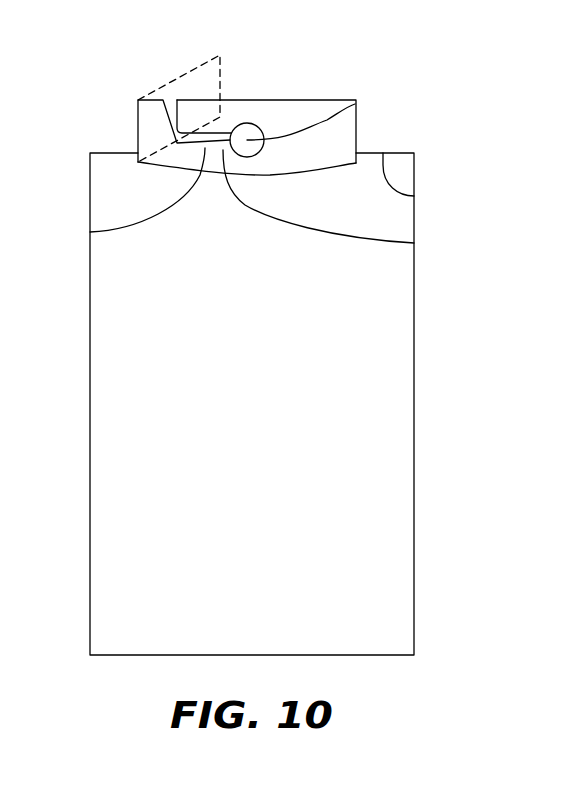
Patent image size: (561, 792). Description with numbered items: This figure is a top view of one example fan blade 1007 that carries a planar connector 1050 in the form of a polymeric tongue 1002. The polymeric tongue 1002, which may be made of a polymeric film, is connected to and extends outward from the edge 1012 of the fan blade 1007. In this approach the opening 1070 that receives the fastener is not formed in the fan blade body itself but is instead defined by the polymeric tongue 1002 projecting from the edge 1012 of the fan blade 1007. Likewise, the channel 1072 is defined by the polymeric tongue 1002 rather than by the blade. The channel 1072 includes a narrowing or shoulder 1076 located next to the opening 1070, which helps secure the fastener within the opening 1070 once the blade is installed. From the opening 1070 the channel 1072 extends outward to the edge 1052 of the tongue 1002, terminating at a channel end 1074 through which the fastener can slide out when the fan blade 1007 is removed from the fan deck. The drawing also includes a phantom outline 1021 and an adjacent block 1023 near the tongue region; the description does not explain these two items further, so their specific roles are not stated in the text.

The polymeric tongue 1002 is at (338, 143).
The fan blade 1007 is at (398, 302).
The edge of the fan blade 1012 is at (414, 196).
The phantom position of latch member 1021 is at (196, 86).
The latch block 1023 is at (138, 135).
The planar connector 1050 is at (305, 103).
The edge of the tongue 1052 is at (300, 100).
The opening 1070 is at (345, 113).
The channel 1072 is at (90, 232).
The channel end 1074 is at (178, 113).
The narrowing or shoulder 1076 is at (414, 243).